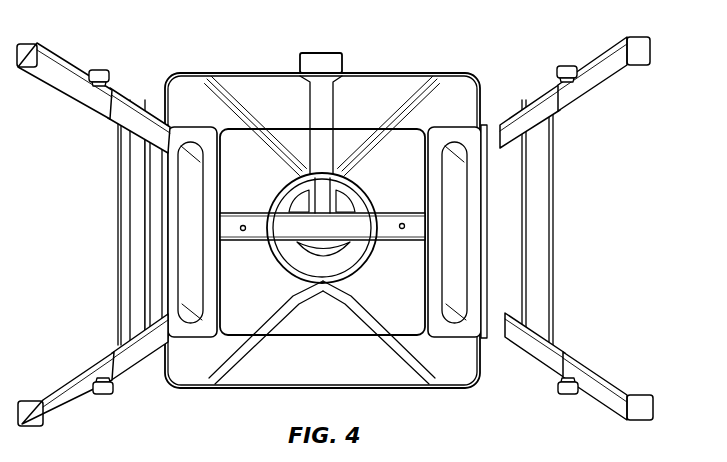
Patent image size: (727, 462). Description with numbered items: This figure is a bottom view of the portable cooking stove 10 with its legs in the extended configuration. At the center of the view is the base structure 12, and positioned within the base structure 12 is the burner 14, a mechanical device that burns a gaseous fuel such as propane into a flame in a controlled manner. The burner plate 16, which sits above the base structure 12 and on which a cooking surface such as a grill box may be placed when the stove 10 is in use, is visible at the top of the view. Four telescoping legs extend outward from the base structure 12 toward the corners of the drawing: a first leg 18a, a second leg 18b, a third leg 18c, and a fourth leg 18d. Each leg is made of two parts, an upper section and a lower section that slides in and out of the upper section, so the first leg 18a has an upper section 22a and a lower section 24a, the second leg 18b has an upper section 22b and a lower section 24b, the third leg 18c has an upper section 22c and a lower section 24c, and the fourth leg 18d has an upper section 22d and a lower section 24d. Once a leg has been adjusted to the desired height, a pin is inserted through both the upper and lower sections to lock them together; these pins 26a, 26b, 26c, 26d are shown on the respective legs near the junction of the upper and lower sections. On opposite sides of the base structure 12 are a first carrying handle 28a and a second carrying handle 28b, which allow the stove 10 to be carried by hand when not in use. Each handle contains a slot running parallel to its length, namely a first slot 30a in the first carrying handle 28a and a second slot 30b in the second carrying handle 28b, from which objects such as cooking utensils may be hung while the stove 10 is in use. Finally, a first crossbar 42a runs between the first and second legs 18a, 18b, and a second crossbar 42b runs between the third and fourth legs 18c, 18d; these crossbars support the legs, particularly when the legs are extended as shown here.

The stove 10 is at (415, 62).
The base structure 12 is at (290, 128).
The burner 14 is at (281, 190).
The burner plate 16 is at (372, 72).
The first leg 18a is at (100, 85).
The second leg 18b is at (104, 384).
The third leg 18c is at (567, 79).
The fourth leg 18d is at (572, 381).
The upper section 22a is at (123, 95).
The upper section 22b is at (126, 372).
The upper section 22c is at (557, 95).
The upper section 22d is at (548, 368).
The lower section 24a is at (70, 63).
The lower section 24b is at (73, 401).
The lower section 24c is at (597, 60).
The lower section 24d is at (600, 403).
The pin 26a is at (103, 70).
The pin 26b is at (103, 398).
The pin 26c is at (574, 50).
The pin 26d is at (567, 397).
The first carrying handle 28a is at (166, 257).
The second carrying handle 28b is at (484, 253).
The first slot 30a is at (170, 218).
The second slot 30b is at (470, 213).
The first crossbar 42a is at (118, 199).
The second crossbar 42b is at (548, 195).